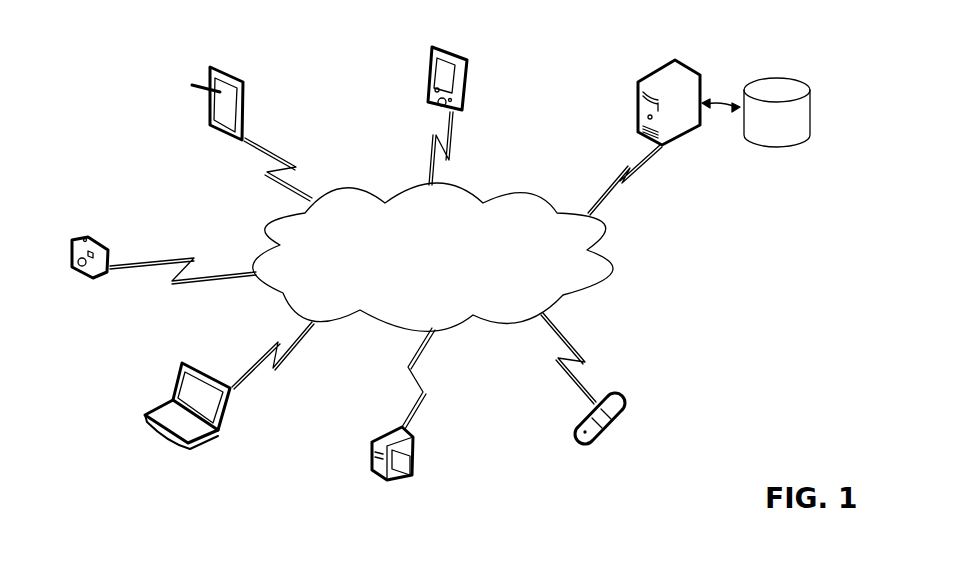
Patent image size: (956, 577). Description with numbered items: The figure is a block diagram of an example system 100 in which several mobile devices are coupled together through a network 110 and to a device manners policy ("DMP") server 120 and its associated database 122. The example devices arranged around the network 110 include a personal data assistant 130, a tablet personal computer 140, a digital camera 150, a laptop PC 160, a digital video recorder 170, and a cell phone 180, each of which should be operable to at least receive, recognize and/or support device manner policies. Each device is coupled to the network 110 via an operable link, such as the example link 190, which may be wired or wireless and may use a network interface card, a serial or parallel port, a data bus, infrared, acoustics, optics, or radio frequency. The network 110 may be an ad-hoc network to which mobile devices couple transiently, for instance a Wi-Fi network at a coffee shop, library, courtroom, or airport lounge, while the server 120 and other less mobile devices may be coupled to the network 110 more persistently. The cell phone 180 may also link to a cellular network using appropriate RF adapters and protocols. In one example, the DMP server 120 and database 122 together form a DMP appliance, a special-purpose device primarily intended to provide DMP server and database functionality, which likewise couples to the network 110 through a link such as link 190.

The system 100 is at (727, 325).
The network 110 is at (433, 257).
The device manners policy server 120 is at (675, 60).
The database 122 is at (777, 145).
The personal data assistant 130 is at (432, 47).
The tablet personal computer 140 is at (210, 67).
The digital camera 150 is at (87, 237).
The laptop PC 160 is at (218, 432).
The digital video recorder 170 is at (410, 477).
The cell phone 180 is at (595, 443).
The link 190 is at (628, 202).